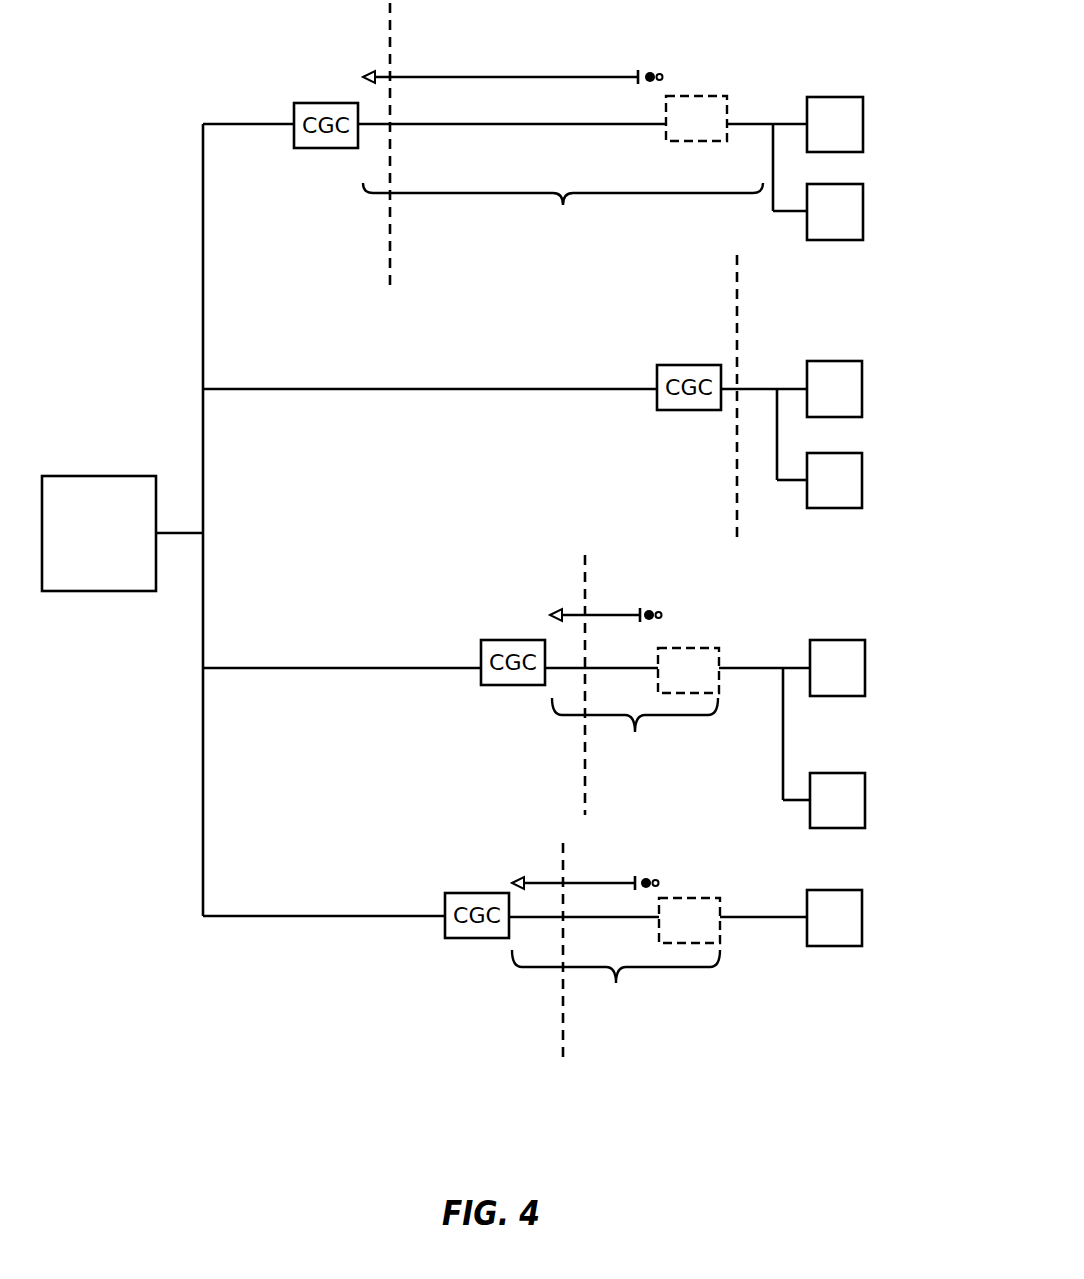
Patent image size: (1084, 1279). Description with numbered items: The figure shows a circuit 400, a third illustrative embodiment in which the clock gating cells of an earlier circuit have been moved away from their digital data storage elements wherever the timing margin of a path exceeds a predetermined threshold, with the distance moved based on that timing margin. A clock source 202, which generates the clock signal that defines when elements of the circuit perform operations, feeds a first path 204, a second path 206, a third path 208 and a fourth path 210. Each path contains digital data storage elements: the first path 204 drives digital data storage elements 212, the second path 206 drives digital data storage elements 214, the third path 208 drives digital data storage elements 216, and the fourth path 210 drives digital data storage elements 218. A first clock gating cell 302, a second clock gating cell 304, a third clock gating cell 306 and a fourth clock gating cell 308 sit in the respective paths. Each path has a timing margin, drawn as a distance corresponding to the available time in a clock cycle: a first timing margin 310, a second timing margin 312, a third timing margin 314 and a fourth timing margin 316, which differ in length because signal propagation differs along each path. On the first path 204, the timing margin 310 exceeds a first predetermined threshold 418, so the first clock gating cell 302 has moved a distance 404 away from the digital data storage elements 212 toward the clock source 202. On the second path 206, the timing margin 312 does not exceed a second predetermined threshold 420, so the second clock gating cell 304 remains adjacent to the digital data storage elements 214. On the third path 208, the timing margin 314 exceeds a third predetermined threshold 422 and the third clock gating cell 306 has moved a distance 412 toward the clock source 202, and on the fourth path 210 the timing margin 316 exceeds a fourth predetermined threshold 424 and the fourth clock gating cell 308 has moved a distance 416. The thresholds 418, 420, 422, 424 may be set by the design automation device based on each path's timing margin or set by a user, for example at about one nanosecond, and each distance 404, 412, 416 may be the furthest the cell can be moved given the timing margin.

The circuit 400 is at (152, 717).
The clock source 202 is at (90, 476).
The first path 204 is at (241, 123).
The second path 206 is at (230, 389).
The third path 208 is at (230, 668).
The fourth path 210 is at (230, 916).
The digital data storage elements 212 is at (863, 130).
The digital data storage elements 214 is at (862, 394).
The digital data storage elements 216 is at (864, 697).
The digital data storage elements 218 is at (862, 917).
The first clock gating cell 302 is at (324, 148).
The second clock gating cell 304 is at (689, 411).
The third clock gating cell 306 is at (508, 686).
The fourth clock gating cell 308 is at (470, 940).
The first timing margin 310 is at (560, 168).
The second timing margin 312 is at (765, 388).
The third timing margin 314 is at (632, 705).
The fourth timing margin 316 is at (614, 956).
The distance 404 is at (483, 77).
The distance 412 is at (612, 614).
The distance 416 is at (588, 883).
The first predetermined threshold 418 is at (388, 22).
The second predetermined threshold 420 is at (735, 289).
The third predetermined threshold 422 is at (583, 576).
The fourth predetermined threshold 424 is at (562, 848).